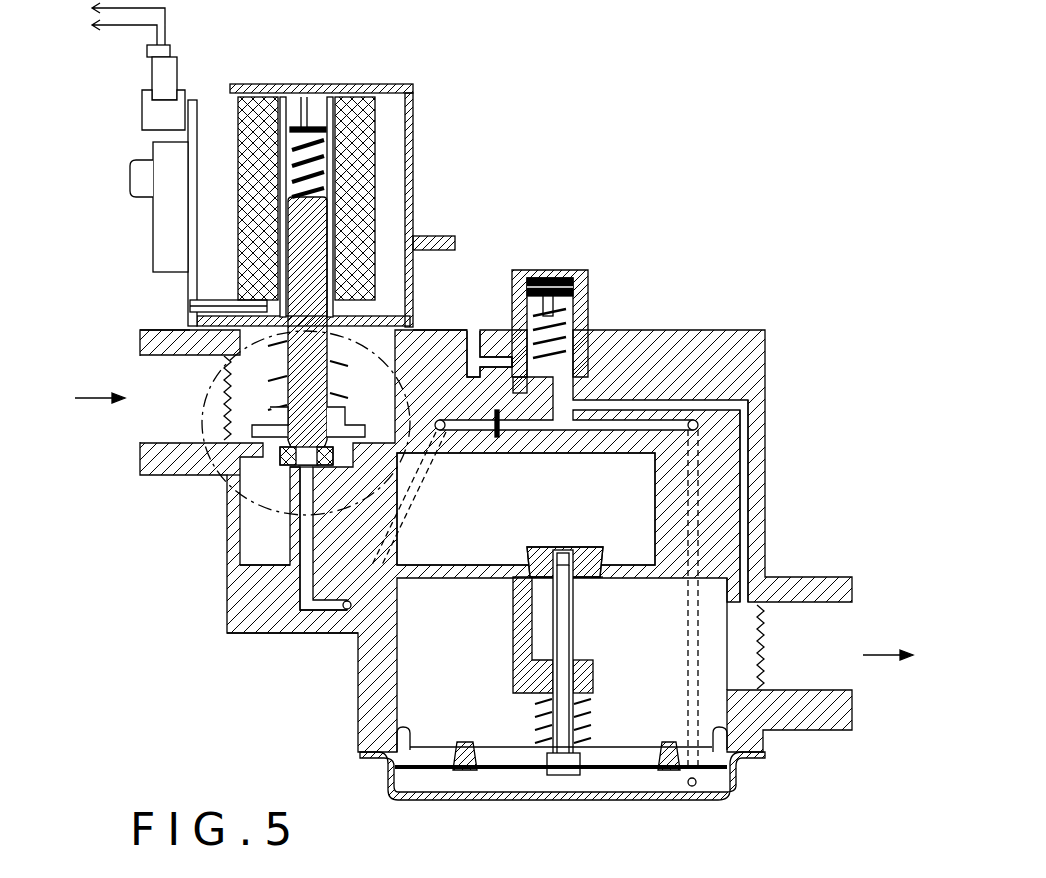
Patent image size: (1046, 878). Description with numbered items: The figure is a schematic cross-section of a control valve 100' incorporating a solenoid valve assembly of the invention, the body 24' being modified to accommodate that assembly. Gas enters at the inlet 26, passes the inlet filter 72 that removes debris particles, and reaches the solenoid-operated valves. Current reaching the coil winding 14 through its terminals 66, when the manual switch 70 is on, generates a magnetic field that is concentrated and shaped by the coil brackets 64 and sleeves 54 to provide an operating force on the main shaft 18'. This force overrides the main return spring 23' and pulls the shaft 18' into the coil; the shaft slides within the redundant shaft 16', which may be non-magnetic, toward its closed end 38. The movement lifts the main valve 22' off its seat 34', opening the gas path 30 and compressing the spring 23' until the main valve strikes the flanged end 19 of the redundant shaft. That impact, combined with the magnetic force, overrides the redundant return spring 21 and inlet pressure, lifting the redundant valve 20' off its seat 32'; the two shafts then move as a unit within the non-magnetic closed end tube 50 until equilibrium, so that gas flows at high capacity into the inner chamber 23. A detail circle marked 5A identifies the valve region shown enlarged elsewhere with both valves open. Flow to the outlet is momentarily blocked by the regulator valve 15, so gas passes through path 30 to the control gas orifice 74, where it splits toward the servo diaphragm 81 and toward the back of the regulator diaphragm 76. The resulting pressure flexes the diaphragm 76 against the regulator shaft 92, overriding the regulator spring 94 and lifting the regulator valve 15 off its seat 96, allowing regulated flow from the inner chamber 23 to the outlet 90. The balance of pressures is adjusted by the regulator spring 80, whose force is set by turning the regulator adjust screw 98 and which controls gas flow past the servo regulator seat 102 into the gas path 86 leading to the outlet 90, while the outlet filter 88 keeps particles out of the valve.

The control valve 100' is at (496, 424).
The terminals 66 is at (120, 66).
The manual switch 70 is at (128, 178).
The coil winding 14 is at (238, 120).
The sleeves 54 is at (378, 140).
The main return spring 23' is at (335, 183).
The closed end tube 50 is at (293, 96).
The closed end 38 is at (309, 145).
The main shaft 18' is at (376, 309).
The coil brackets 64 is at (413, 267).
The regulator adjust screw 98 is at (535, 275).
The servo diaphragm 81 is at (576, 302).
The servo regulator seat 102 is at (578, 370).
The regulator spring 80 is at (505, 357).
The redundant shaft 16' is at (440, 300).
The inlet filter 72 is at (142, 332).
The detail circle 5A is at (205, 378).
The inlet 26 is at (160, 417).
The redundant return spring 21 is at (338, 360).
The main valve 22' is at (249, 501).
The flanged end 19 is at (335, 460).
The redundant seat 32' is at (234, 498).
The redundant valve 20' is at (184, 482).
The main seat 34' is at (235, 556).
The gas path 30 is at (323, 612).
The body 24' is at (271, 659).
The control gas orifice 74 is at (500, 425).
The gas path 86 is at (748, 430).
The inner chamber 23 is at (526, 548).
The regulator valve 15 is at (566, 546).
The regulator shaft 92 is at (574, 628).
The regulator valve seat 96 is at (591, 577).
The regulator spring 94 is at (503, 778).
The regulator diaphragm 76 is at (617, 800).
The outlet filter 88 is at (764, 627).
The outlet 90 is at (822, 637).